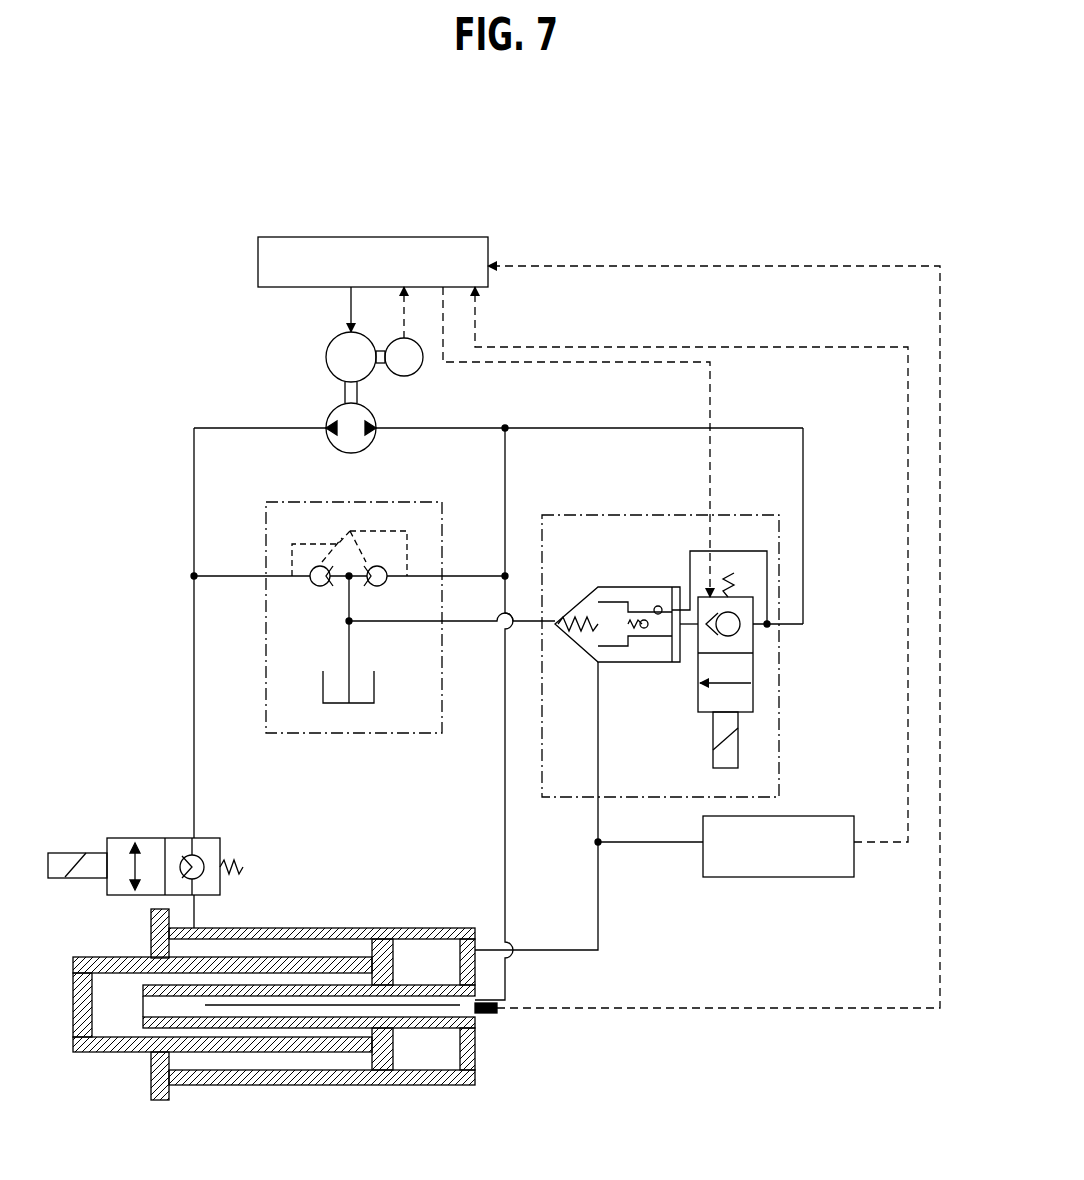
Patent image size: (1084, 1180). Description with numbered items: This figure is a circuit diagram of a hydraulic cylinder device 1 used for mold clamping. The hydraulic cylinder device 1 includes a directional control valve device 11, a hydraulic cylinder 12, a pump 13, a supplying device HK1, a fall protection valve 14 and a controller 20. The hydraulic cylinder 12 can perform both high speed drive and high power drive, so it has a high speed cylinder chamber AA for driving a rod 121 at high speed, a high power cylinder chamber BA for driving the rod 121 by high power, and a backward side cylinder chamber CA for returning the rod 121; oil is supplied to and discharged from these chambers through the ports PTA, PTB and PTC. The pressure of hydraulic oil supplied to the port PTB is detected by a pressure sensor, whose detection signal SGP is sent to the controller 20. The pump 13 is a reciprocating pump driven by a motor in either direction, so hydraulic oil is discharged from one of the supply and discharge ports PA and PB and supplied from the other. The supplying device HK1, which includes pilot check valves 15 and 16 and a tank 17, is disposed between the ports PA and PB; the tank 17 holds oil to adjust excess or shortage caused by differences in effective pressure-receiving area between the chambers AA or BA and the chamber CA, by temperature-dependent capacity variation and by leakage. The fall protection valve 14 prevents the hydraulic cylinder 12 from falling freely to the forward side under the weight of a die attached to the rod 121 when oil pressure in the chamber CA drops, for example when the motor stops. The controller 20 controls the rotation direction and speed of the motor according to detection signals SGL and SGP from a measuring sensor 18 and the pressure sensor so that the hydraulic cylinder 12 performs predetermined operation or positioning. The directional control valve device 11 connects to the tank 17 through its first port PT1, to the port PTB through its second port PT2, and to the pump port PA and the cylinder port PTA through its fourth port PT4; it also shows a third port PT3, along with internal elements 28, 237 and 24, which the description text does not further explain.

The hydraulic cylinder device 1 is at (582, 124).
The controller 20 is at (258, 263).
The pump 13 is at (330, 418).
The supply and discharge port PA is at (376, 426).
The supply and discharge port PB is at (328, 426).
The supplying device HK1 is at (384, 738).
The pilot check valve 15 is at (313, 584).
The pilot check valve 16 is at (349, 579).
The tank 17 is at (323, 687).
The directional control valve device 11 is at (779, 680).
The relief valve 28 is at (650, 632).
The pilot port 237 is at (655, 607).
The solenoid switching valve 24 is at (753, 700).
The first port PT1 is at (555, 622).
The second port PT2 is at (599, 664).
The port PT3 is at (683, 628).
The fourth port PT4 is at (803, 626).
The fall protection valve 14 is at (150, 838).
The hydraulic cylinder 12 is at (290, 1087).
The rod 121 is at (77, 1055).
The high speed cylinder chamber AA is at (118, 1015).
The backward side cylinder chamber CA is at (281, 953).
The high power cylinder chamber BA is at (427, 1053).
The measuring sensor 18 is at (437, 1017).
The port PTA is at (480, 994).
The port PTB is at (488, 943).
The port PTC is at (200, 928).
The detection signal SGL is at (747, 266).
The detection signal SGP is at (848, 347).